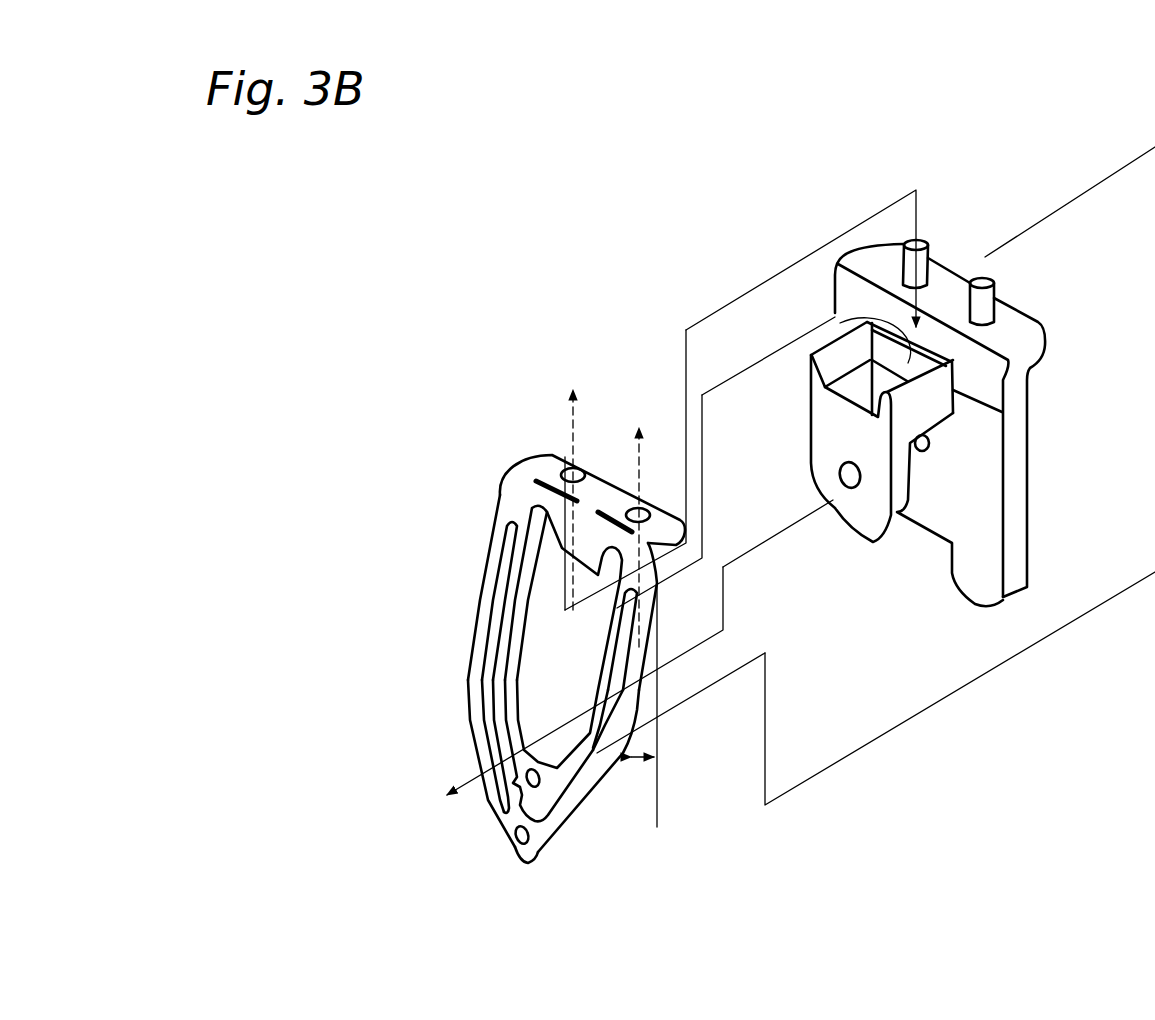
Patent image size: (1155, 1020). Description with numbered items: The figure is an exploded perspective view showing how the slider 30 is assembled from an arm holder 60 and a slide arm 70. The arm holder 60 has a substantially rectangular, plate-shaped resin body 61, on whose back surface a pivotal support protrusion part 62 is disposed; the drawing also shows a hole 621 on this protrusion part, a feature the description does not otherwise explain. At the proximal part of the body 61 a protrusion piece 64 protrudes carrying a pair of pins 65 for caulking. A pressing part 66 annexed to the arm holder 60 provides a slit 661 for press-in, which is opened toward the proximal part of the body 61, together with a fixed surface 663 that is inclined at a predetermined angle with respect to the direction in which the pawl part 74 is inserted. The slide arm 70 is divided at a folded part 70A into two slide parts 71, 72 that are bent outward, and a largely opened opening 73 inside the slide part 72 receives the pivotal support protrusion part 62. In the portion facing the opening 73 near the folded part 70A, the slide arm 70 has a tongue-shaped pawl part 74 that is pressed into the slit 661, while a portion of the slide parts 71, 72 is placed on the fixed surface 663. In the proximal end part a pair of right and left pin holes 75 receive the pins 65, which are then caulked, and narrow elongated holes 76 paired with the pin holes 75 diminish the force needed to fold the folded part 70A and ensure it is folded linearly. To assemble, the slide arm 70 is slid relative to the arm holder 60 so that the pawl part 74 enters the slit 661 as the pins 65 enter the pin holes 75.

The slider 30 is at (802, 107).
The arm holder 60 is at (845, 215).
The body 61 is at (983, 508).
The pivotal support protrusion part 62 is at (822, 424).
The hole 621 is at (838, 485).
The protrusion piece 64 is at (1010, 317).
The pins 65 is at (985, 278).
The pressing part 66 is at (948, 352).
The slit 661 is at (930, 452).
The fixed surface 663 is at (987, 380).
The slide arm 70 is at (460, 405).
The folded part 70A is at (592, 507).
The slide part 71 is at (508, 843).
The slide part 72 is at (520, 767).
The opening 73 is at (537, 670).
The pawl part 74 is at (550, 547).
The pin holes 75 is at (565, 465).
The elongated holes 76 is at (600, 518).